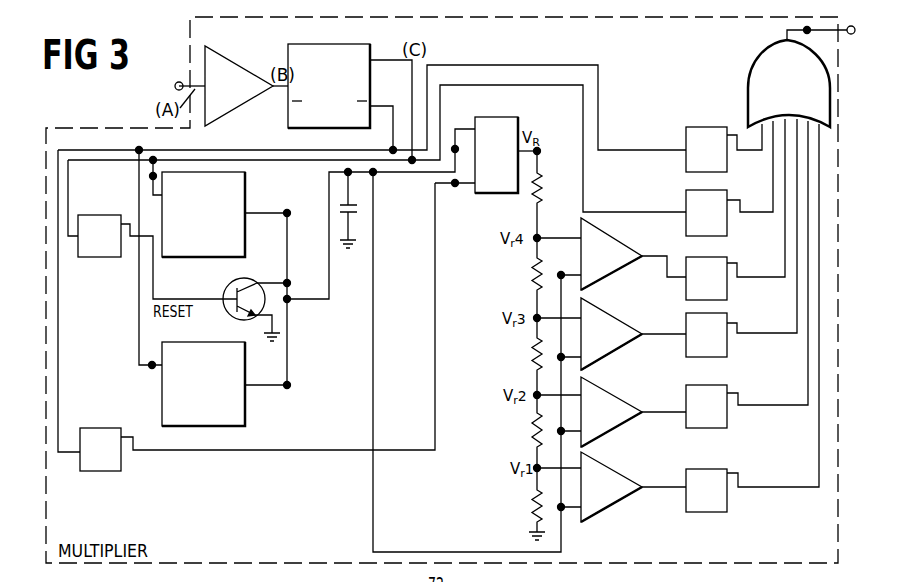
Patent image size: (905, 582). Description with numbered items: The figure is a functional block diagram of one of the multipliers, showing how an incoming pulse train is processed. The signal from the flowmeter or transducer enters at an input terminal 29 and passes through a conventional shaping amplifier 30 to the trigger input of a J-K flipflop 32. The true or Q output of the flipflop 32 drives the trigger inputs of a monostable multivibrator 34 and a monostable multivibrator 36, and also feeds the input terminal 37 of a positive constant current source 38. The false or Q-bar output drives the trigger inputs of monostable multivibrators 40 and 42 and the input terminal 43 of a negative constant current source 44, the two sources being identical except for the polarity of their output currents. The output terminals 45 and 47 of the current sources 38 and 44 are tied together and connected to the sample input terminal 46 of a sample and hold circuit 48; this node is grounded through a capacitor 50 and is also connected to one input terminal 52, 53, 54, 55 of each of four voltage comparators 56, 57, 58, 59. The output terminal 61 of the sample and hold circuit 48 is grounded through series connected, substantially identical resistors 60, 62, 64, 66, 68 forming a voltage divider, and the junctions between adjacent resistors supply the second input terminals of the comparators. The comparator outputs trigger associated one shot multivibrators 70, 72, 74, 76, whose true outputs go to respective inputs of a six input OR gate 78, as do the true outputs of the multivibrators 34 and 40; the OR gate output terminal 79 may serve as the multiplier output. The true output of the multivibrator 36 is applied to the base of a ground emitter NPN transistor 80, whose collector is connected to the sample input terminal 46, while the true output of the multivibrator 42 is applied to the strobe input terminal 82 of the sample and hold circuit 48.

The input terminal 29 is at (179, 81).
The shaping amplifier 30 is at (237, 63).
The J-K flipflop 32 is at (372, 40).
The monostable multivibrator 34 is at (686, 193).
The monostable multivibrator 36 is at (100, 258).
The input terminal of positive constant current source 37 is at (150, 176).
The positive constant current source 38 is at (248, 179).
The monostable multivibrator 40 is at (703, 126).
The monostable multivibrator 42 is at (121, 472).
The input terminal of negative constant current source 43 is at (151, 369).
The negative constant current source 44 is at (248, 426).
The output terminal of positive constant current source 45 is at (291, 213).
The input terminal of sample and hold circuit 46 is at (455, 146).
The output terminal of negative constant current source 47 is at (289, 388).
The sample and hold circuit 48 is at (480, 116).
The capacitor 50 is at (360, 209).
The comparator input terminal 52 is at (562, 511).
The comparator input terminal 53 is at (558, 430).
The comparator input terminal 54 is at (558, 356).
The comparator input terminal 55 is at (561, 272).
The voltage comparator 56 is at (619, 475).
The voltage comparator 57 is at (625, 402).
The voltage comparator 58 is at (625, 322).
The voltage comparator 59 is at (622, 244).
The resistor 60 is at (532, 513).
The output terminal of sample and hold circuit 61 is at (541, 151).
The resistor 62 is at (532, 433).
The resistor 64 is at (532, 357).
The resistor 66 is at (532, 278).
The resistor 68 is at (545, 198).
The monostable multivibrator 70 is at (728, 470).
The monostable multivibrator 72 is at (729, 388).
The monostable multivibrator 74 is at (731, 316).
The monostable multivibrator 76 is at (731, 258).
The OR gate 78 is at (760, 62).
The output terminal 79 is at (852, 35).
The NPN transistor 80 is at (238, 318).
The strobe input terminal 82 is at (455, 187).